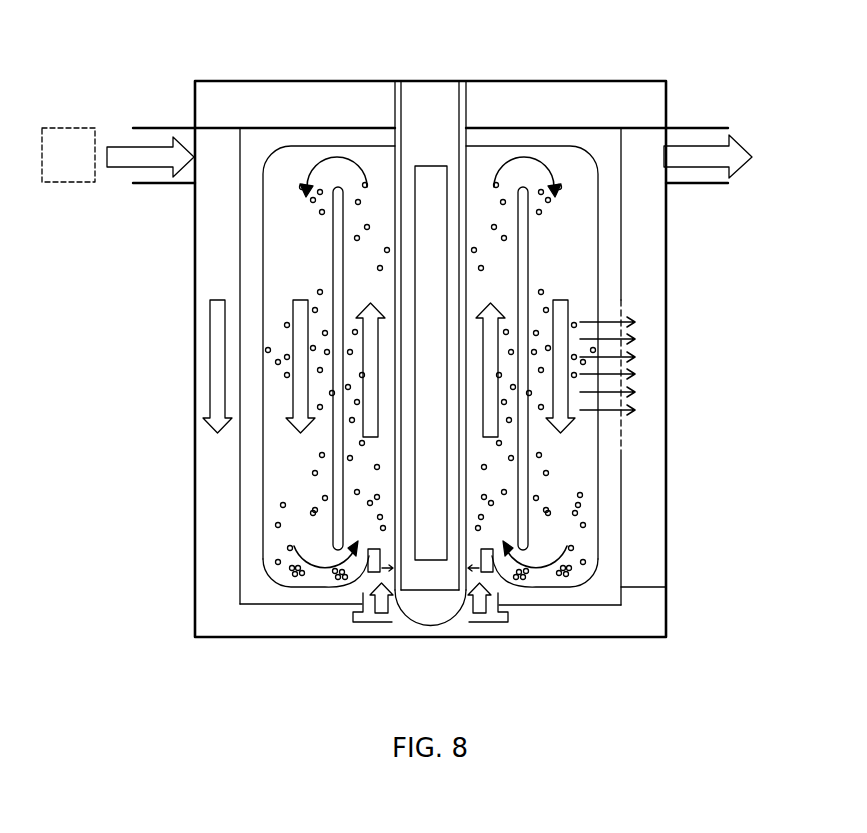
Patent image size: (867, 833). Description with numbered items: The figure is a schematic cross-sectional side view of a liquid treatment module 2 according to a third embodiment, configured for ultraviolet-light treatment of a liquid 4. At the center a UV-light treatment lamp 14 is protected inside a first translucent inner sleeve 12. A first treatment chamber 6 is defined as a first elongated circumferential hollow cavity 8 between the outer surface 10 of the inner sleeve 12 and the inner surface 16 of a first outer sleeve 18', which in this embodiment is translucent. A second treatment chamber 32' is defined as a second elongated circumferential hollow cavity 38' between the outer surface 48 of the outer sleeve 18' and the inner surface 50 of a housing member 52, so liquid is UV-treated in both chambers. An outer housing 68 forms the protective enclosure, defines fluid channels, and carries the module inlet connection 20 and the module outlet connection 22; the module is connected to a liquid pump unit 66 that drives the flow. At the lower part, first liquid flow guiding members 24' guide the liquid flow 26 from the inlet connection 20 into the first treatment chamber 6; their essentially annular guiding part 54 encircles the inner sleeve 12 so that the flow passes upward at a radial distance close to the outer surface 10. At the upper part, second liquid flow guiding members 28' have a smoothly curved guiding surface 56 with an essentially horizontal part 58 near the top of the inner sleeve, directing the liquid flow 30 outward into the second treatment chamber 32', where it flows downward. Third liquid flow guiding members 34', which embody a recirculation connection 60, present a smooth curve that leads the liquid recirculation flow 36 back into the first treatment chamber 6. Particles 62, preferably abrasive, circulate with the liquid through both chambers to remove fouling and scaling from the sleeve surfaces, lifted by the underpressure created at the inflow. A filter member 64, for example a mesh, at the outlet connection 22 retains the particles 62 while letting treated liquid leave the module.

The liquid treatment module 2 is at (158, 58).
The liquid 4 is at (130, 155).
The first treatment chamber 6 is at (430, 349).
The first elongated circumferential hollow cavity 8 is at (431, 374).
The outer surface of first translucent inner sleeve 10 is at (392, 240).
The first translucent inner sleeve 12 is at (397, 467).
The UV-light treatment lamp 14 is at (431, 363).
The inner surface of first outer sleeve 16 is at (345, 267).
The first outer sleeve 18' is at (425, 449).
The module inlet connection 20 is at (155, 185).
The module outlet connection 22 is at (704, 183).
The first liquid flow guiding members 24' is at (432, 633).
The liquid flow 26 is at (380, 618).
The second liquid flow guiding members 28' is at (437, 121).
The liquid flow 30 is at (335, 158).
The second treatment chamber 32' is at (426, 347).
The third liquid flow guiding members 34' is at (422, 627).
The liquid recirculation flow 36 is at (315, 565).
The second elongated circumferential hollow cavity 38' is at (427, 490).
The outer surface of translucent first outer sleeve 48 is at (330, 267).
The inner surface of housing member 50 is at (430, 213).
The housing member 52 is at (262, 190).
The guiding part 54 is at (371, 549).
The guiding surface 56 is at (270, 160).
The essentially horizontal part 58 is at (305, 145).
The recirculation connection 60 is at (318, 578).
The particles 62 is at (583, 497).
The filter member 64 is at (192, 147).
The liquid pump unit 66 is at (68, 155).
The outer housing 68 is at (195, 303).